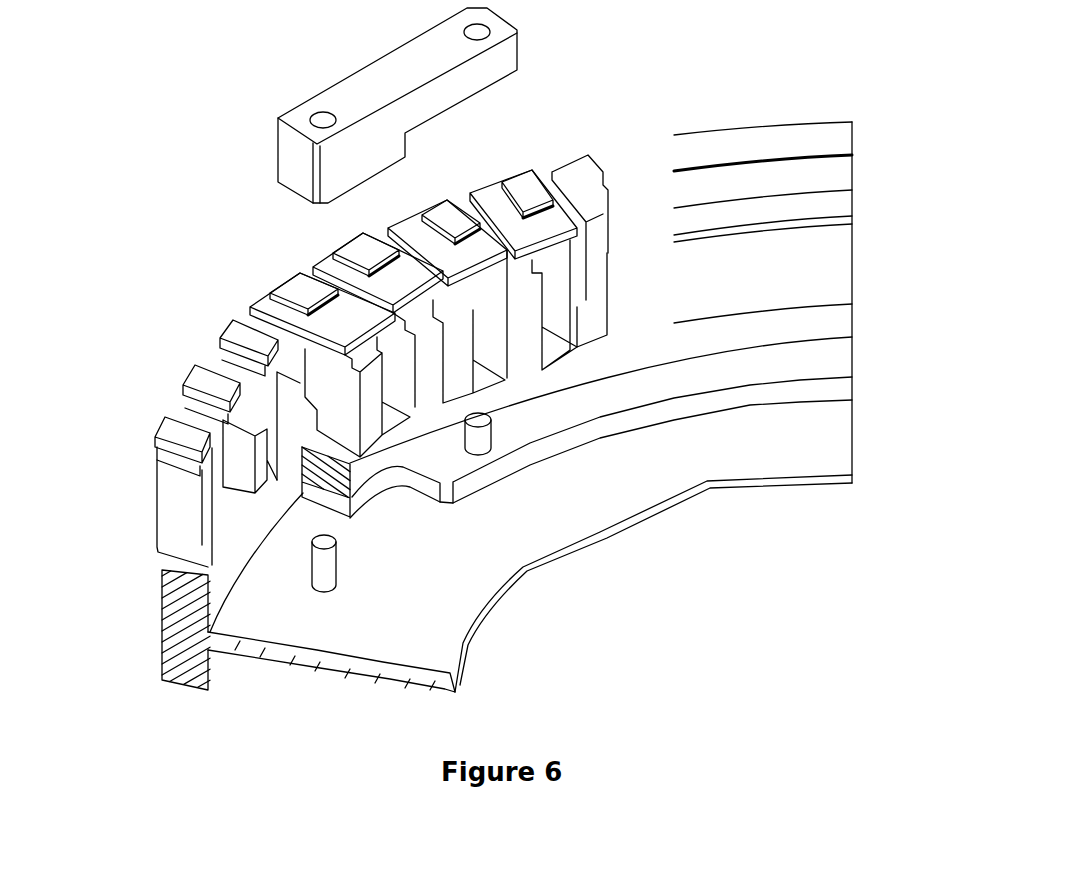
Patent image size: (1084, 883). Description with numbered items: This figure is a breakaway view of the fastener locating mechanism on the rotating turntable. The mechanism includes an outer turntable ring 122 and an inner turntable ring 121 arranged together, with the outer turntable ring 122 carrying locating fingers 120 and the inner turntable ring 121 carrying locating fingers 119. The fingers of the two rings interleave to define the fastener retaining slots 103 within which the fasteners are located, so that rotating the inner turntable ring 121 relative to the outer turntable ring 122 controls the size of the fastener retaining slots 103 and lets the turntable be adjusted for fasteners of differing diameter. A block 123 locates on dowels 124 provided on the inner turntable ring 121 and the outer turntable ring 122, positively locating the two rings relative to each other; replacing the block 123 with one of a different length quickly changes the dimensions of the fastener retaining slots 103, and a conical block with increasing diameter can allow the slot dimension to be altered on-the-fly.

The fastener retaining slots 103 is at (543, 168).
The locating fingers 119 is at (290, 313).
The locating fingers 120 is at (302, 287).
The inner turntable ring 121 is at (677, 377).
The outer turntable ring 122 is at (173, 542).
The block 123 is at (343, 77).
The dowels 124 is at (475, 442).